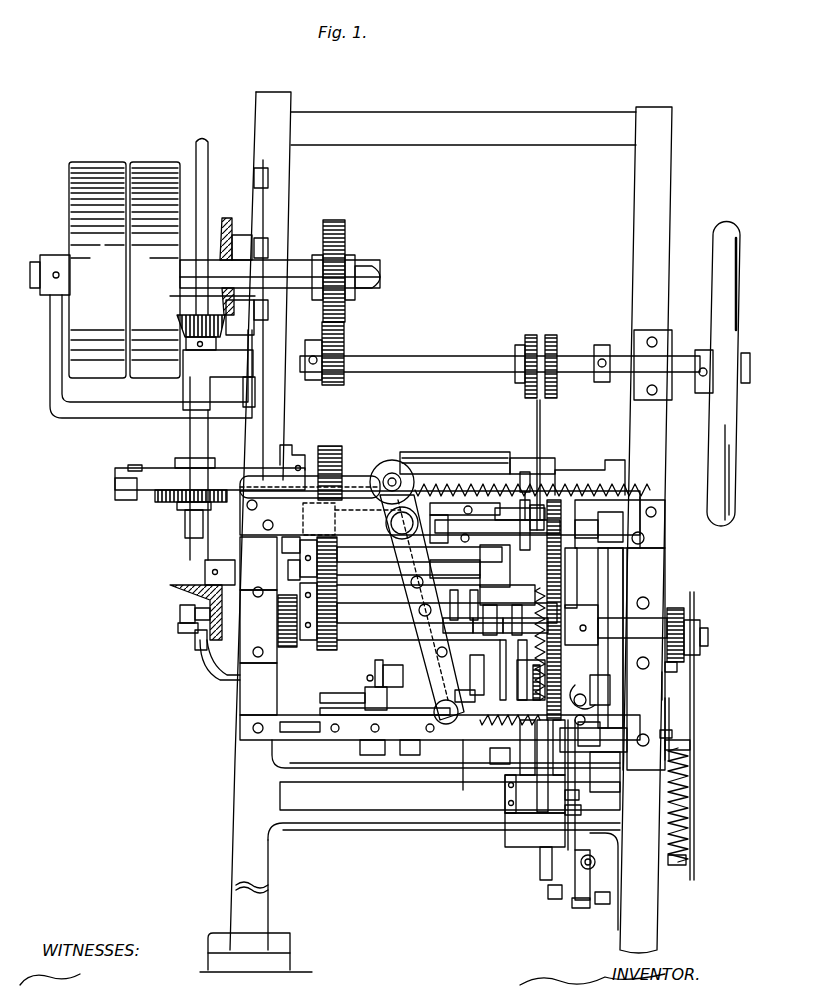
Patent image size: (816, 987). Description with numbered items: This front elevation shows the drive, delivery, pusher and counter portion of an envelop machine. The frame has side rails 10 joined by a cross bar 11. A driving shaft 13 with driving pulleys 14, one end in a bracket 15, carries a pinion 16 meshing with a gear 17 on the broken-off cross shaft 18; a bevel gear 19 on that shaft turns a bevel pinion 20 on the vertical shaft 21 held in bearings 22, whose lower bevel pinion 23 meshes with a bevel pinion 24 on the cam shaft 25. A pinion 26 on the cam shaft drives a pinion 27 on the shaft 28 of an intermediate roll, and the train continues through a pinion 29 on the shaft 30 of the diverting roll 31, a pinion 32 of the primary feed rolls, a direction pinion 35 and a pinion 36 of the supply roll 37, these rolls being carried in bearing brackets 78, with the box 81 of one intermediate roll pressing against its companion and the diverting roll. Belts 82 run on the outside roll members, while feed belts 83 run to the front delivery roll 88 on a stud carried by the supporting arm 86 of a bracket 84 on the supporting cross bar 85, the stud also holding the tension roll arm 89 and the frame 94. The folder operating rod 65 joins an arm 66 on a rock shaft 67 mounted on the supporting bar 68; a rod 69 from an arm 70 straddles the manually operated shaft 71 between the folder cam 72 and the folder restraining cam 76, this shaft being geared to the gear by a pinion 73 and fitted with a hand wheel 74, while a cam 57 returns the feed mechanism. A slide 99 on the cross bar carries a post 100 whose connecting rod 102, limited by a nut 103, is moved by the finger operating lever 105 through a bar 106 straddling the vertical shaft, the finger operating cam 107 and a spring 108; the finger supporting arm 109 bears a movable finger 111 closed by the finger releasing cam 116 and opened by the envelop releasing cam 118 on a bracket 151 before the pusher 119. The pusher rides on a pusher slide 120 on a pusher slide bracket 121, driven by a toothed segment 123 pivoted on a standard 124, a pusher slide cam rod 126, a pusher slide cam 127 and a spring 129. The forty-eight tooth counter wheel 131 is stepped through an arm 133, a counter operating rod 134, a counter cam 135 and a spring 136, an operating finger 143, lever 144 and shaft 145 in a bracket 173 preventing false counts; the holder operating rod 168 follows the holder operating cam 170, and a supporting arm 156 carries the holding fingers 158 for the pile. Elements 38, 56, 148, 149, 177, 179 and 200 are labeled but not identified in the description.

The side rails 10 is at (257, 104).
The cross bar 11 is at (364, 816).
The driving shaft 13 is at (290, 266).
The driving pulleys 14 is at (148, 166).
The bracket 15 is at (52, 329).
The pinion 16 is at (348, 258).
The gear 17 is at (336, 224).
The cross shaft 18 is at (379, 281).
The bevel gear 19 is at (230, 226).
The bevel pinion 20 is at (180, 320).
The vertically arranged shaft 21 is at (207, 142).
The bearings 22 is at (192, 370).
The bevel pinion 23 is at (178, 588).
The bevel pinion 24 is at (185, 628).
The cam shaft 25 is at (180, 612).
The pinion 26 is at (316, 645).
The pinion 27 is at (423, 566).
The shaft 28 is at (652, 598).
The pinion 29 is at (278, 625).
The shaft 30 is at (340, 560).
The diverting roll 31 is at (482, 595).
The pinion 32 is at (440, 513).
The direction pinion 35 is at (343, 470).
The pinion 36 is at (328, 448).
The supply roll 37 is at (460, 456).
The block 38 is at (495, 525).
The gear 56 is at (272, 621).
The cam 57 is at (402, 621).
The folder operating rod 65 is at (543, 610).
The arm 66 is at (498, 488).
The rock shaft 67 is at (645, 523).
The supporting bar 68 is at (645, 512).
The rod 69 is at (540, 430).
The arm 70 is at (524, 472).
The manually operated shaft 71 is at (594, 356).
The folder cam 72 is at (527, 340).
The pinion 73 is at (344, 345).
The hand wheel 74 is at (733, 421).
The folder restraining cam 76 is at (551, 332).
The bearing brackets 78 is at (288, 445).
The box 81 is at (372, 688).
The belts 82 is at (494, 625).
The feed belts 83 is at (466, 625).
The bracket 84 is at (355, 722).
The supporting cross bar 85 is at (240, 738).
The supporting arm 86 is at (385, 728).
The front roll 88 is at (462, 722).
The tension roll arm 89 is at (420, 730).
The frame 94 is at (380, 660).
The slide 99 is at (615, 748).
The post 100 is at (510, 725).
The connecting rod 102 is at (526, 747).
The nut 103 is at (594, 732).
The finger operating lever 105 is at (480, 800).
The bar 106 is at (166, 468).
The finger operating cam 107 is at (165, 495).
The spring 108 is at (572, 470).
The finger supporting arm 109 is at (600, 705).
The movable finger 111 is at (610, 697).
The finger releasing cam 116 is at (480, 695).
The envelop releasing cam 118 is at (608, 690).
The pusher 119 is at (505, 665).
The pusher slide 120 is at (518, 840).
The pusher slide bracket 121 is at (505, 836).
The toothed segment 123 is at (580, 815).
The standard 124 is at (578, 800).
The pusher slide cam rod 126 is at (690, 684).
The pusher slide cam 127 is at (604, 636).
The spring 129 is at (578, 592).
The ratchet or counter wheel 131 is at (610, 900).
The arm 133 is at (675, 864).
The counter operating rod 134 is at (688, 712).
The counter cam 135 is at (690, 606).
The spring 136 is at (686, 808).
The operating finger 143 is at (598, 888).
The lever 144 is at (580, 905).
The shaft 145 is at (598, 869).
The block 148 is at (598, 785).
The bar 149 is at (548, 795).
The bracket 151 is at (665, 736).
The supporting arm 156 is at (690, 666).
The holding fingers 158 is at (527, 625).
The holder operating rod 168 is at (232, 678).
The holder operating cam 170 is at (195, 640).
The bracket 173 is at (610, 856).
The bar 177 is at (540, 870).
The bar 179 is at (550, 892).
The block 200 is at (487, 514).